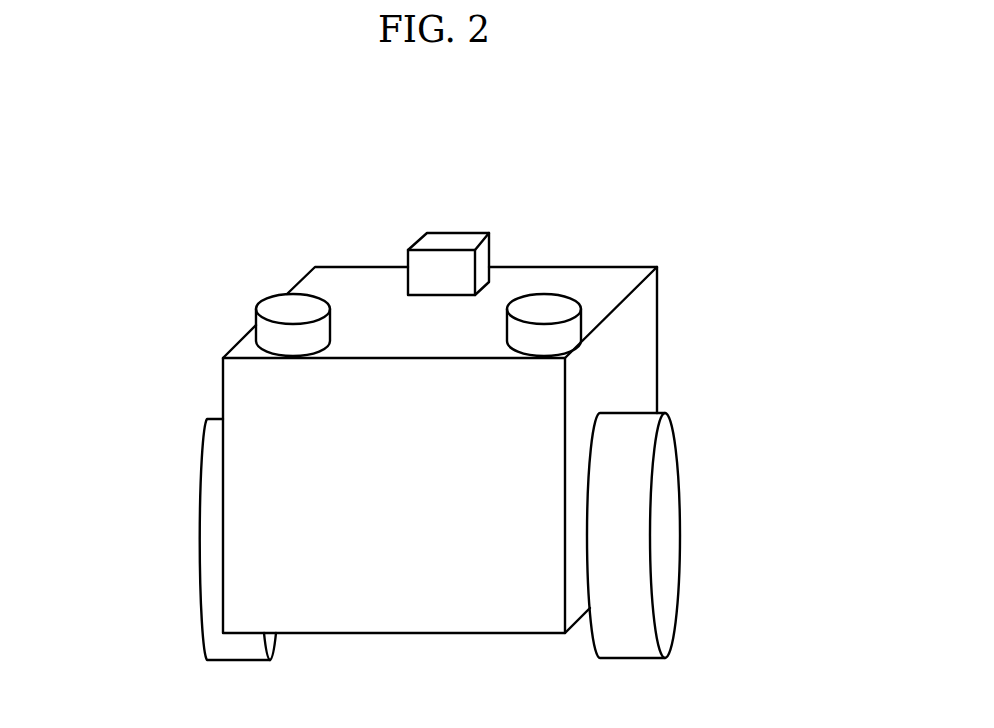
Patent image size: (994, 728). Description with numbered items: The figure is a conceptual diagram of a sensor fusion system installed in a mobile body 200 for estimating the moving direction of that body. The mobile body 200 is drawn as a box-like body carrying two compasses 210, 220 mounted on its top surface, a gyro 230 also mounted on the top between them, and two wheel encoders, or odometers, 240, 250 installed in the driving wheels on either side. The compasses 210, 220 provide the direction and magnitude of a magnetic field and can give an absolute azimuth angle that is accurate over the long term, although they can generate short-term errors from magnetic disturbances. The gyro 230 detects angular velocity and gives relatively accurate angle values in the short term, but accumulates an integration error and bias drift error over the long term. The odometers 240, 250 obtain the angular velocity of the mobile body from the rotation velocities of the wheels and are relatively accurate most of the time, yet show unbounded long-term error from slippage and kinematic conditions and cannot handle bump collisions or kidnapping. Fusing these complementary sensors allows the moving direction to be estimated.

The mobile body 200 is at (417, 620).
The compass 210 is at (243, 276).
The compass 220 is at (578, 277).
The gyro 230 is at (455, 198).
The wheel encoder (odometer) 240 is at (191, 513).
The wheel encoder (odometer) 250 is at (648, 518).